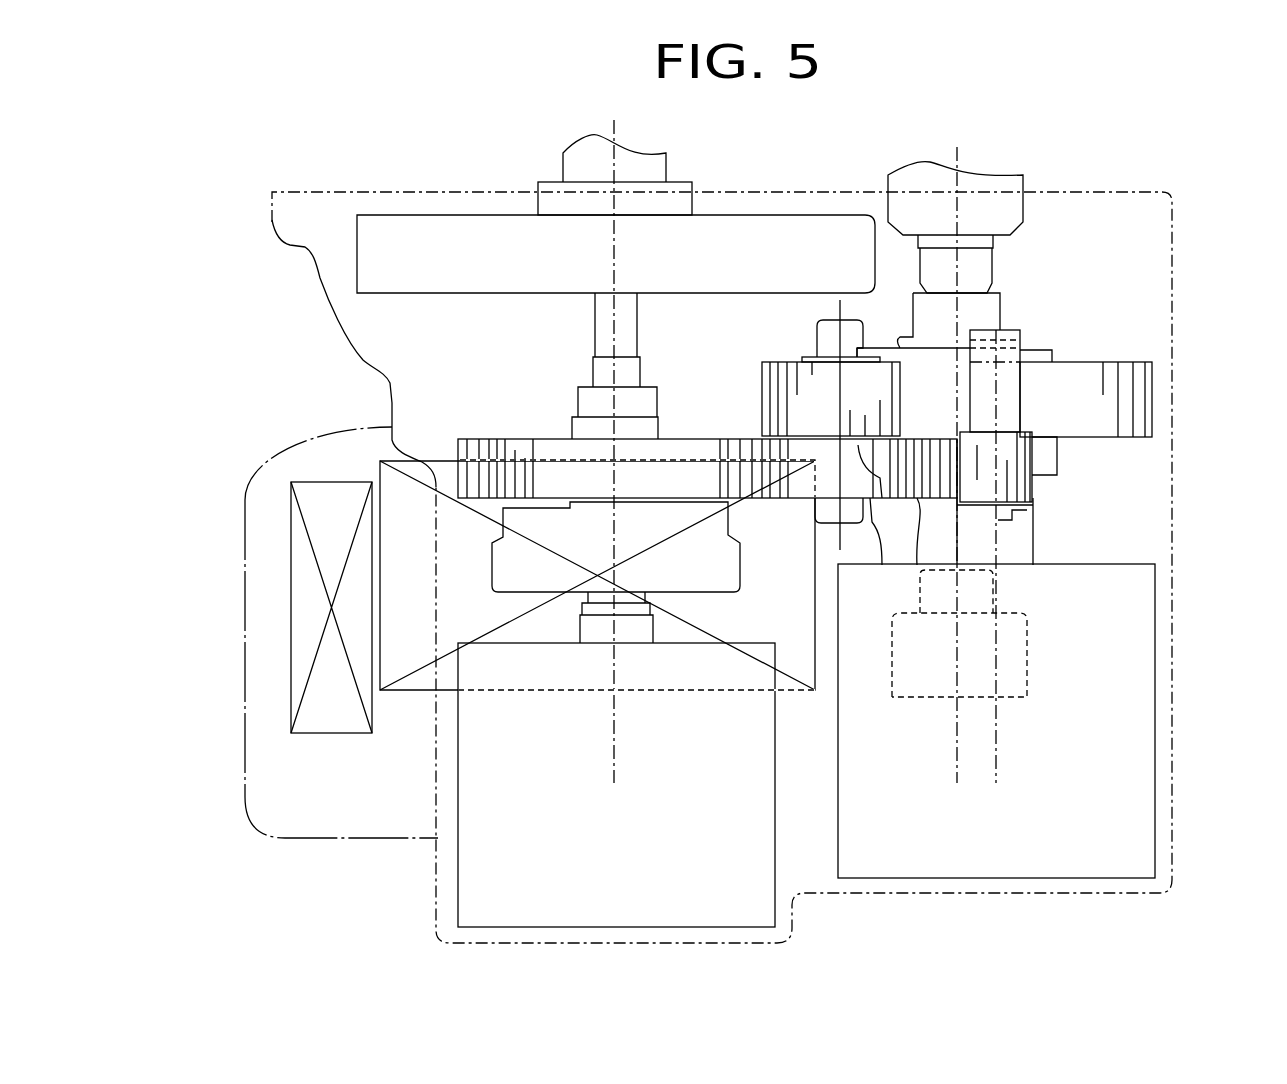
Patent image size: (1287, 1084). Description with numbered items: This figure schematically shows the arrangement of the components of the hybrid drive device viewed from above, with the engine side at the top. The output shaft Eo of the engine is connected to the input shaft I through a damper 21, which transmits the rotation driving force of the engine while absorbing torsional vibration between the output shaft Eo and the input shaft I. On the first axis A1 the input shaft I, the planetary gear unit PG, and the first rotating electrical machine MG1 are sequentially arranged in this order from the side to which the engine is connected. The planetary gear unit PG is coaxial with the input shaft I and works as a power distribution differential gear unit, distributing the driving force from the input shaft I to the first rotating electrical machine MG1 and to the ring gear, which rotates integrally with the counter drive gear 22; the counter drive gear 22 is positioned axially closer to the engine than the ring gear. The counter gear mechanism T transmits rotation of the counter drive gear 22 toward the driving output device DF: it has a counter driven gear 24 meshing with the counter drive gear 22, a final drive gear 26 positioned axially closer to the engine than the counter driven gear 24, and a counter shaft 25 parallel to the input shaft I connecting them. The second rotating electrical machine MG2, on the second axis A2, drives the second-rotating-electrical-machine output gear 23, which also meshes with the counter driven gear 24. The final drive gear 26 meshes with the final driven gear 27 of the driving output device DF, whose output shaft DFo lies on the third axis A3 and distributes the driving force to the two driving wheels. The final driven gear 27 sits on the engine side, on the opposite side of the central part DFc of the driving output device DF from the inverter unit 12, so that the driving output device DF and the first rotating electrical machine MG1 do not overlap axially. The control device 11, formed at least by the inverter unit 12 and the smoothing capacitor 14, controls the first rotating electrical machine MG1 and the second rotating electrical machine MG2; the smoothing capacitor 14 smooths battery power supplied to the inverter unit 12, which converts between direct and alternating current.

The control device 11 is at (482, 637).
The inverter unit 12 is at (412, 693).
The smoothing capacitor 14 is at (291, 565).
The damper 21 is at (350, 280).
The counter drive gear 22 is at (533, 437).
The second-rotating-electrical-machine output gear 23 is at (1057, 470).
The counter driven gear 24 is at (907, 523).
The counter shaft 25 is at (822, 343).
The final drive gear 26 is at (762, 397).
The final driven gear 27 is at (1153, 407).
The output shaft of the engine Eo is at (565, 170).
The input shaft I is at (592, 333).
The planetary gear unit PG is at (708, 585).
The counter gear mechanism T is at (792, 506).
The driving output device DF is at (1052, 350).
The output shaft of the driving output device DFo is at (987, 307).
The central part of the driving output device DFc is at (957, 448).
The first rotating electrical machine MG1 is at (472, 870).
The second rotating electrical machine MG2 is at (1135, 773).
The first axis A1 is at (615, 809).
The second axis A2 is at (1002, 809).
The third axis A3 is at (949, 809).